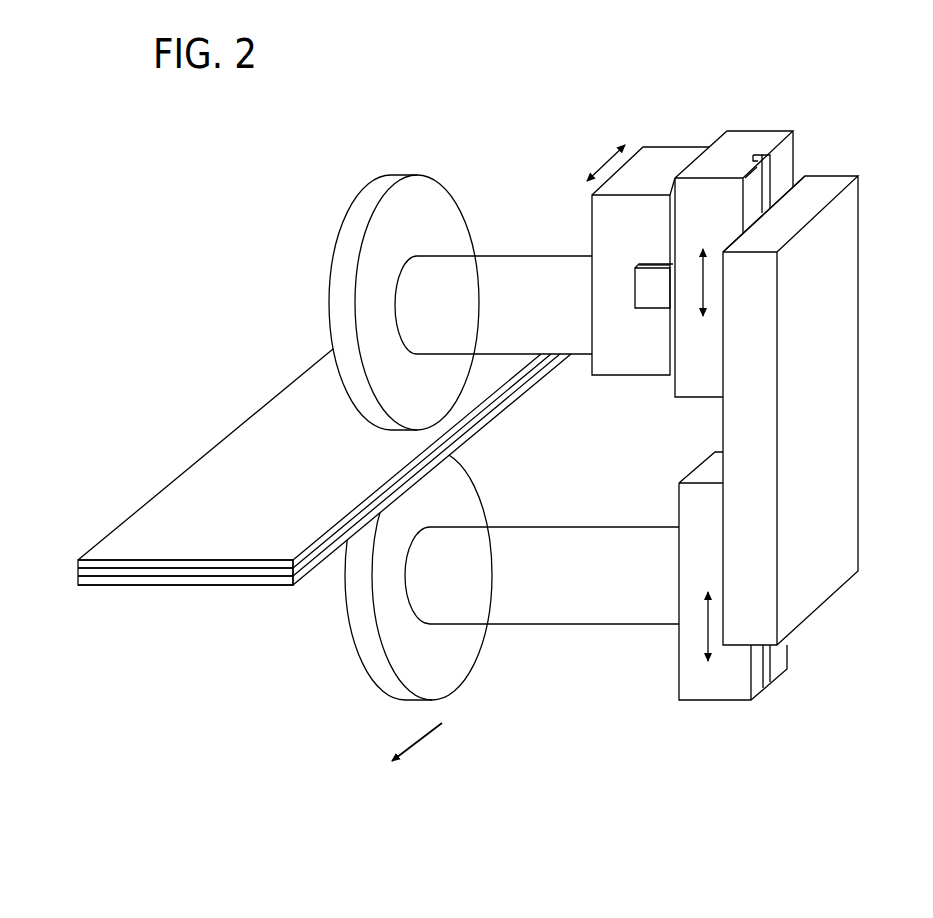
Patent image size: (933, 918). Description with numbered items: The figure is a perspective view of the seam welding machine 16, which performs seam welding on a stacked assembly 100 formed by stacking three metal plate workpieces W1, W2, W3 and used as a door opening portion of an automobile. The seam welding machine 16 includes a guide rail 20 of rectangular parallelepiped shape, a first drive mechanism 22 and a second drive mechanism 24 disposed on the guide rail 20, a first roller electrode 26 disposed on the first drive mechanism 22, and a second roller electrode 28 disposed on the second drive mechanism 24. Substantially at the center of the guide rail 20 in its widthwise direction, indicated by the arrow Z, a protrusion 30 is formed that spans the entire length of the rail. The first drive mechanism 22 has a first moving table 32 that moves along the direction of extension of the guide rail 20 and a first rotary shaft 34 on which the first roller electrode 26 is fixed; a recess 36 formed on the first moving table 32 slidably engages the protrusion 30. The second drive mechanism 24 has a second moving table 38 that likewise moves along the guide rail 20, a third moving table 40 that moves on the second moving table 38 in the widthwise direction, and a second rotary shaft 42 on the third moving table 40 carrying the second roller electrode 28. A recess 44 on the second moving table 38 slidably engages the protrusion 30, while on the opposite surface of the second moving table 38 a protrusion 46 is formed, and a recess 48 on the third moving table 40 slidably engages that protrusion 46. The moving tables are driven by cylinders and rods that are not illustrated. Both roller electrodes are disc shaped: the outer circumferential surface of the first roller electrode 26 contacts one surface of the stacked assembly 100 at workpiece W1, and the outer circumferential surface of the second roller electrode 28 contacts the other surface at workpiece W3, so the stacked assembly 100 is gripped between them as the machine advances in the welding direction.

The seam welding machine 16 is at (224, 167).
The guide rail 20 is at (848, 398).
The first drive mechanism 22 is at (662, 735).
The second drive mechanism 24 is at (589, 115).
The first roller electrode 26 is at (352, 642).
The second roller electrode 28 is at (337, 313).
The protrusion 30 is at (768, 206).
The first moving table 32 is at (716, 697).
The first rotary shaft 34 is at (603, 540).
The recess 36 is at (764, 676).
The second moving table 38 is at (737, 138).
The third moving table 40 is at (675, 147).
The second rotary shaft 42 is at (537, 266).
The recess 44 is at (768, 162).
The protrusion 46 is at (642, 288).
The recess 48 is at (660, 270).
The stacked assembly 100 is at (324, 514).
The workpiece W1 is at (225, 633).
The workpiece W2 is at (157, 573).
The workpiece W3 is at (203, 565).
The widthwise direction of the guide rail Z is at (606, 160).